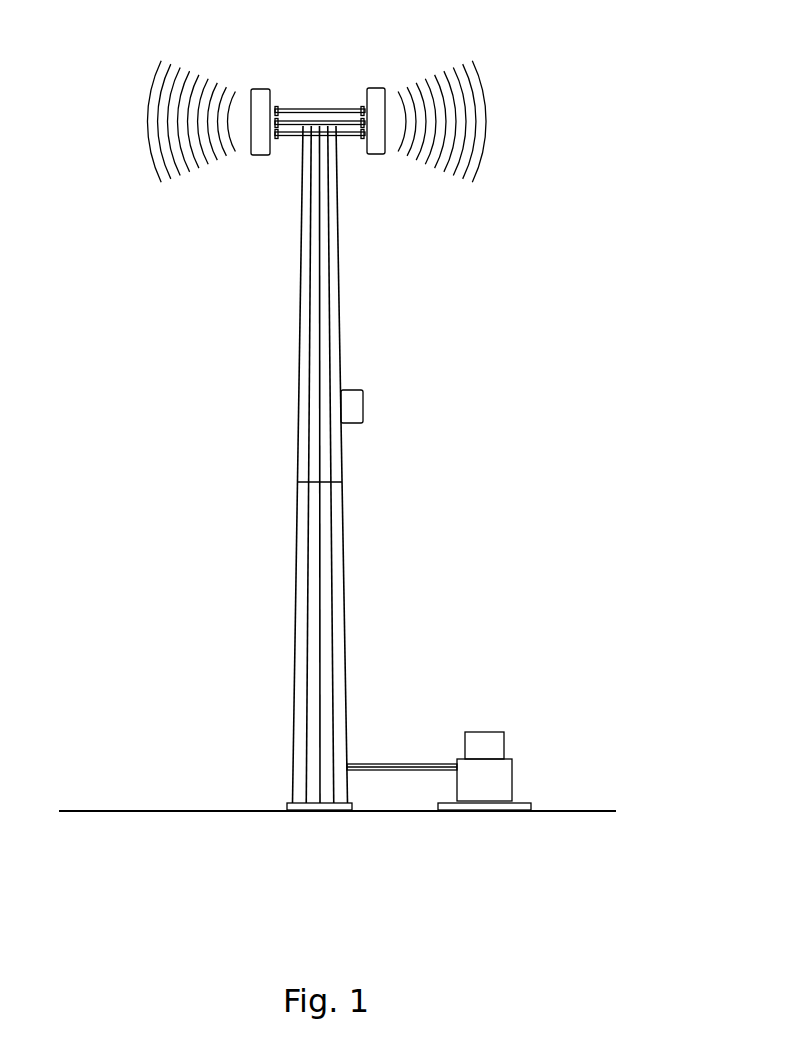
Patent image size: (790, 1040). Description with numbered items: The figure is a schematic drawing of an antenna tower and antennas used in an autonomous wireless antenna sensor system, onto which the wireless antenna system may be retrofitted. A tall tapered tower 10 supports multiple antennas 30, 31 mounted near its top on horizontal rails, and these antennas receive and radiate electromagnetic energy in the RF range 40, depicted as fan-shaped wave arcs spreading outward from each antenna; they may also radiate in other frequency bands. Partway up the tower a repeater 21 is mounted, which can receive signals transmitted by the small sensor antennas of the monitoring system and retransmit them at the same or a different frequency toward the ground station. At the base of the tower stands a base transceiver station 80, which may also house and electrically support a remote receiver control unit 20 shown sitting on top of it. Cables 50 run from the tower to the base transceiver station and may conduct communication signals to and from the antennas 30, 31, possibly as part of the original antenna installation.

The tower 10 is at (290, 444).
The remote receiver control unit 20 is at (518, 742).
The repeater 21 is at (363, 403).
The antenna 30 is at (260, 78).
The antenna 31 is at (381, 77).
The RF range electromagnetic energy 40 is at (135, 122).
The cables 50 is at (413, 748).
The base transceiver station 80 is at (519, 776).